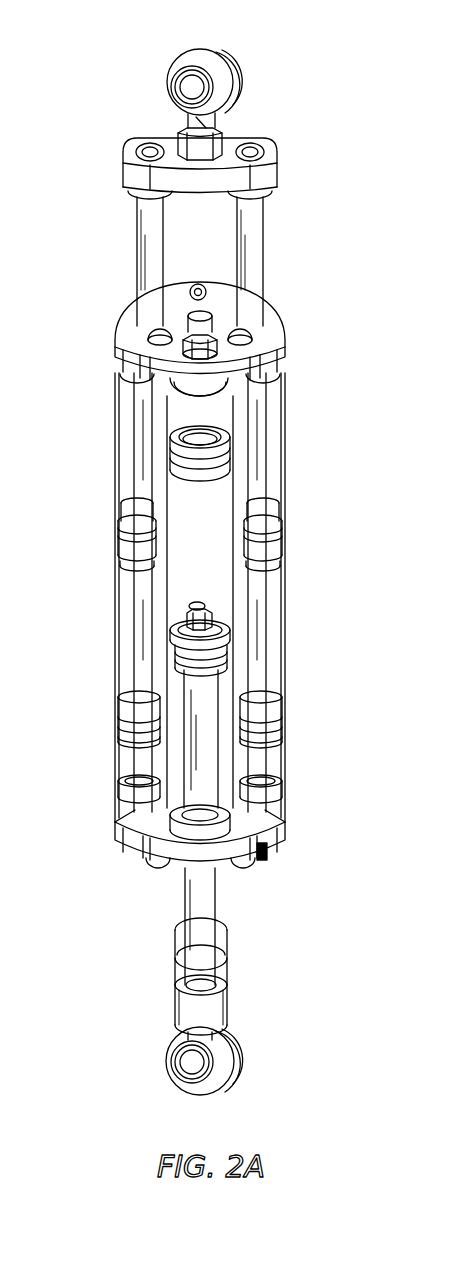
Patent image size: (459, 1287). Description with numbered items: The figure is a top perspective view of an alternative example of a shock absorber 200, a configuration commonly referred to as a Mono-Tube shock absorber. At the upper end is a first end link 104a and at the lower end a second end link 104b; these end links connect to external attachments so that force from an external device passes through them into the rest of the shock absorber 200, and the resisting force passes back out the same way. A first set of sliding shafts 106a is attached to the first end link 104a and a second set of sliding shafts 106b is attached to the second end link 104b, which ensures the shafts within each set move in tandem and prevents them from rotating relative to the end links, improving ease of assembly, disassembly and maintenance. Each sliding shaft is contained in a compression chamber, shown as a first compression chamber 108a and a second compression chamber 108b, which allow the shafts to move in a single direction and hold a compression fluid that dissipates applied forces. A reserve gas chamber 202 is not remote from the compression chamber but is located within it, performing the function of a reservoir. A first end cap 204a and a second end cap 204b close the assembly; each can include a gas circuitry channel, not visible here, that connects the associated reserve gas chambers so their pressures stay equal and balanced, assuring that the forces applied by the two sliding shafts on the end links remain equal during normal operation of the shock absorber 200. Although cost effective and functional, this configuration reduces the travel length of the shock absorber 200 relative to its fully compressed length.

The shock absorber 200 is at (107, 64).
The first end link 104a is at (238, 180).
The second end link 104b is at (193, 1005).
The first end cap 204a is at (285, 323).
The second end cap 204b is at (280, 825).
The reserve gas chamber 202 is at (215, 404).
The first set of sliding shafts 106a is at (255, 457).
The second set of sliding shafts 106b is at (202, 710).
The first compression chamber 108a is at (210, 526).
The second compression chamber 108b is at (270, 628).